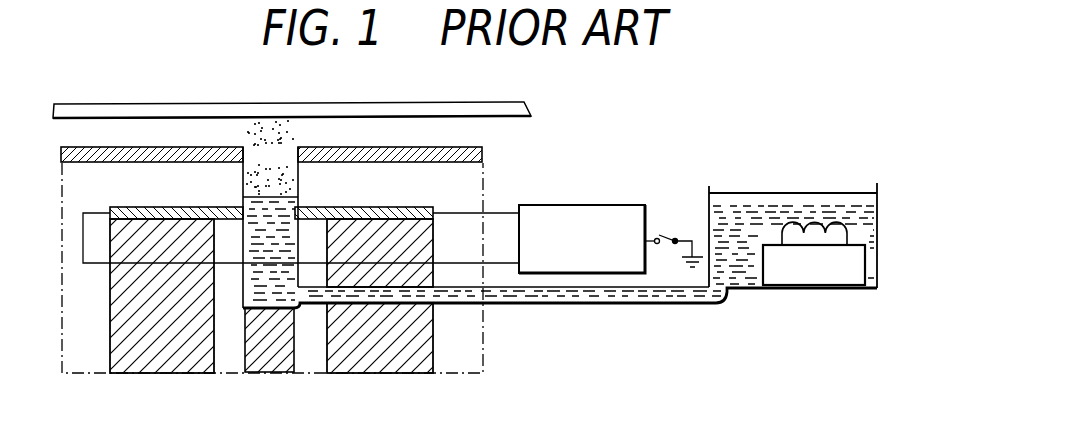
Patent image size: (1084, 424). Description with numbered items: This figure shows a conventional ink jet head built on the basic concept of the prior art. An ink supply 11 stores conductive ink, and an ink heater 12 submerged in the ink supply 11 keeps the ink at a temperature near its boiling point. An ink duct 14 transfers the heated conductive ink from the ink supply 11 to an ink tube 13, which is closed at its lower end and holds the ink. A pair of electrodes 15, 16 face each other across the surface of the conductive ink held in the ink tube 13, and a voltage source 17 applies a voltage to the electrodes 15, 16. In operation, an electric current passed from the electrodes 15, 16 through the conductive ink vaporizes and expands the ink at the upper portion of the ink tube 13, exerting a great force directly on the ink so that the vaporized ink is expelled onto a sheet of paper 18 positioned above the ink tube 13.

The ink supply 11 is at (878, 222).
The ink heater 12 is at (764, 276).
The ink tube 13 is at (243, 290).
The ink duct 14 is at (600, 304).
The electrode 15 is at (152, 207).
The electrode 16 is at (392, 207).
The voltage source 17 is at (616, 205).
The sheet of paper 18 is at (517, 102).